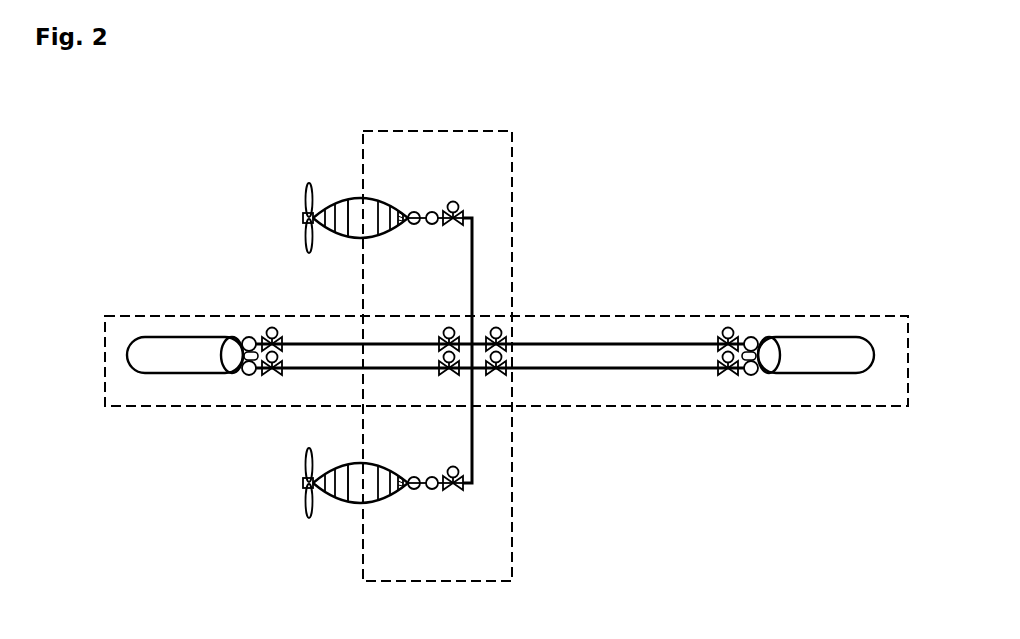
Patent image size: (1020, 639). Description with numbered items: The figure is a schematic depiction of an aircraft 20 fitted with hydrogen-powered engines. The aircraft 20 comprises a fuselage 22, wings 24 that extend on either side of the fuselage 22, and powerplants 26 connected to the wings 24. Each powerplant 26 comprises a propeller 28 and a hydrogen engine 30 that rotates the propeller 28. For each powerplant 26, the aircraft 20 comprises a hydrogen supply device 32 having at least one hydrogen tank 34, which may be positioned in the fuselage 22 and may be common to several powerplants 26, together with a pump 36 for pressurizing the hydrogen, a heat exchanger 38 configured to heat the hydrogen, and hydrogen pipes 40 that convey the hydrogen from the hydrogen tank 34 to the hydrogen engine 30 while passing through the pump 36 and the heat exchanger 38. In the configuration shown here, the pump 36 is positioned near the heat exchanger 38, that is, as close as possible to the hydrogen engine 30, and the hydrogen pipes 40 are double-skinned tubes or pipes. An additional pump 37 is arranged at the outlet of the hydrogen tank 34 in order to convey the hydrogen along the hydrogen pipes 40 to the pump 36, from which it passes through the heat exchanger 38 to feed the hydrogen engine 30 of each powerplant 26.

The aircraft 20 is at (127, 268).
The fuselage 22 is at (160, 407).
The wings 24 is at (513, 177).
The powerplant 26 is at (350, 243).
The propeller 28 is at (305, 192).
The hydrogen engine 30 is at (346, 212).
The hydrogen supply device 32 is at (479, 288).
The hydrogen tank 34 is at (160, 363).
The pump 36 is at (436, 210).
The additional pump 37 is at (243, 357).
The heat exchanger 38 is at (419, 208).
The hydrogen pipes 40 is at (470, 312).